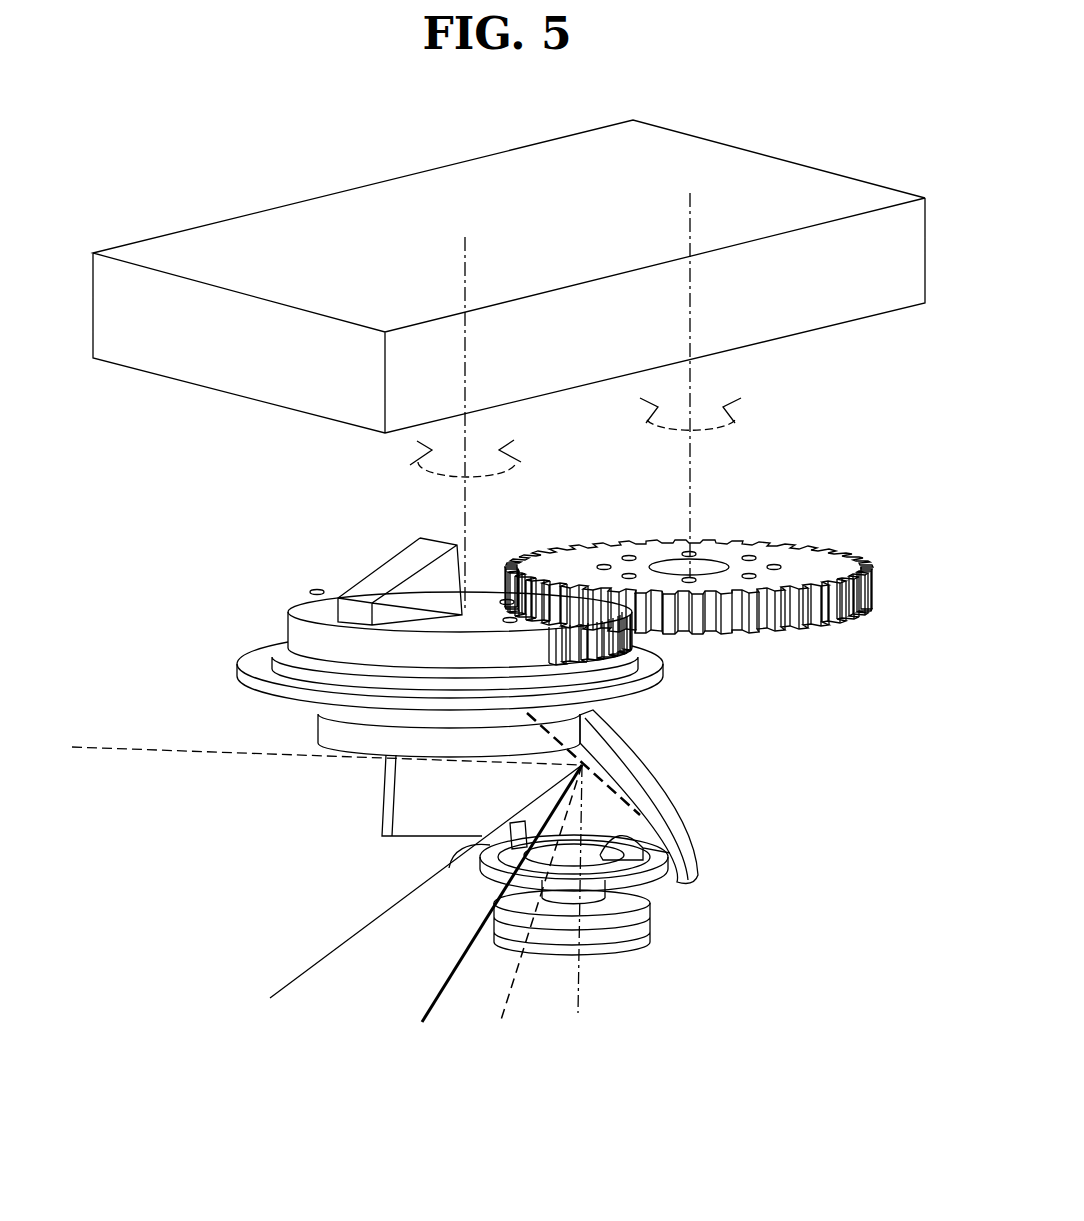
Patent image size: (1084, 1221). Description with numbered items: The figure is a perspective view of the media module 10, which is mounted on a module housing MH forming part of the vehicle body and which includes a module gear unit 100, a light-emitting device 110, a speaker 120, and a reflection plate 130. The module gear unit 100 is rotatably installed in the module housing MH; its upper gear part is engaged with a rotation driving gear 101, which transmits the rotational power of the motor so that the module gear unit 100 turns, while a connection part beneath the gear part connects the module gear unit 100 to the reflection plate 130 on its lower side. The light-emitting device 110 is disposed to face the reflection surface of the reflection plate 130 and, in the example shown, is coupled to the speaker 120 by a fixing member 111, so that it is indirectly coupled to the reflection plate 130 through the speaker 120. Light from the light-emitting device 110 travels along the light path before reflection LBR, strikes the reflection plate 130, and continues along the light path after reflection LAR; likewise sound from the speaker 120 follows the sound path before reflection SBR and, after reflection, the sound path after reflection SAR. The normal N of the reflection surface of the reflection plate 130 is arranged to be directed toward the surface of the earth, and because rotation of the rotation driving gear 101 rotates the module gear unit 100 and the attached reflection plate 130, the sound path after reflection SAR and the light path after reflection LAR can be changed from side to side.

The module housing MH is at (252, 240).
The media module 10 is at (562, 508).
The module gear unit 100 is at (477, 590).
The rotation driving gear 101 is at (765, 553).
The light-emitting device 110 is at (643, 872).
The fixing member 111 is at (449, 868).
The speaker 120 is at (633, 935).
The reflection plate 130 is at (663, 792).
The sound path after reflection SAR is at (125, 748).
The light path after reflection LAR is at (322, 960).
The normal N is at (443, 993).
The light path before reflection LBR is at (512, 997).
The sound path before reflection SBR is at (577, 992).